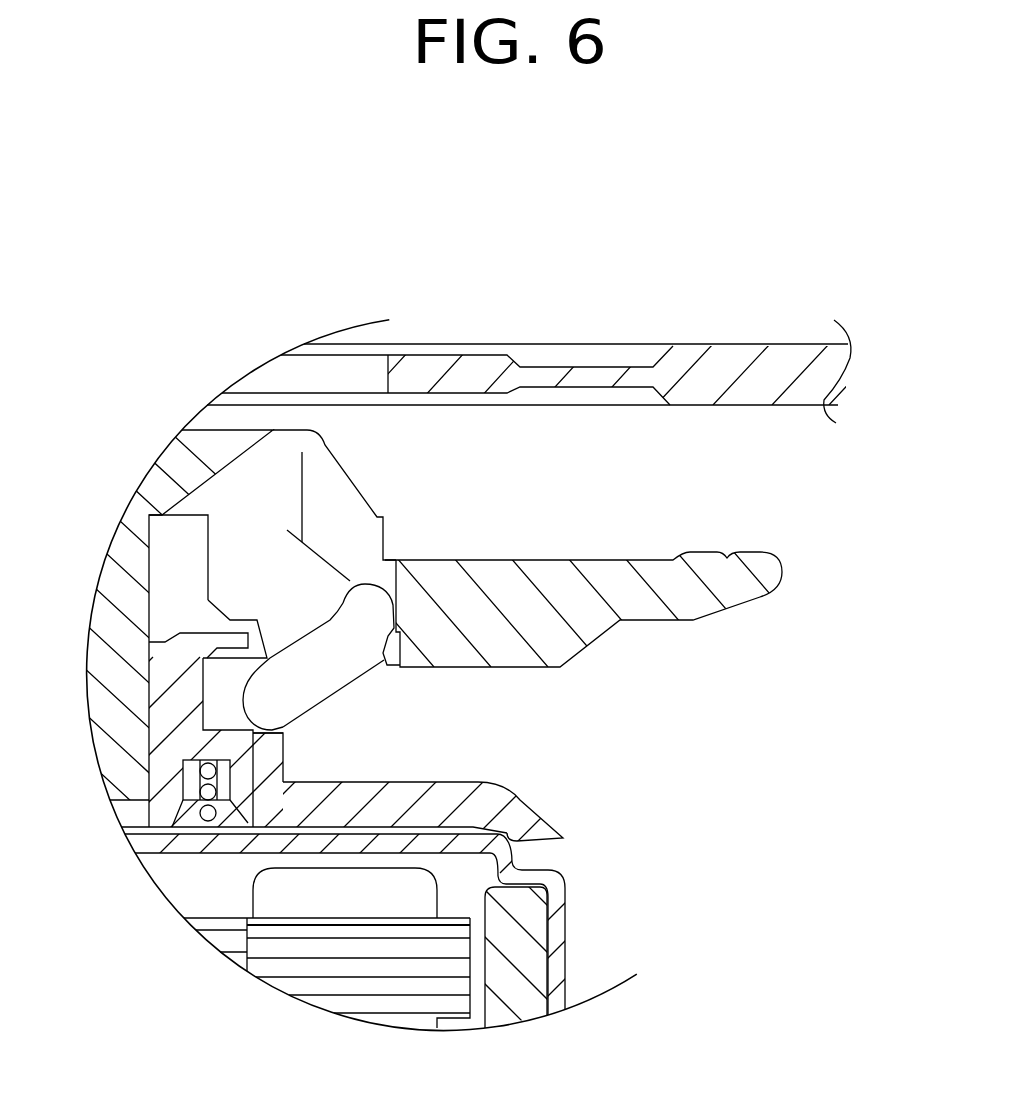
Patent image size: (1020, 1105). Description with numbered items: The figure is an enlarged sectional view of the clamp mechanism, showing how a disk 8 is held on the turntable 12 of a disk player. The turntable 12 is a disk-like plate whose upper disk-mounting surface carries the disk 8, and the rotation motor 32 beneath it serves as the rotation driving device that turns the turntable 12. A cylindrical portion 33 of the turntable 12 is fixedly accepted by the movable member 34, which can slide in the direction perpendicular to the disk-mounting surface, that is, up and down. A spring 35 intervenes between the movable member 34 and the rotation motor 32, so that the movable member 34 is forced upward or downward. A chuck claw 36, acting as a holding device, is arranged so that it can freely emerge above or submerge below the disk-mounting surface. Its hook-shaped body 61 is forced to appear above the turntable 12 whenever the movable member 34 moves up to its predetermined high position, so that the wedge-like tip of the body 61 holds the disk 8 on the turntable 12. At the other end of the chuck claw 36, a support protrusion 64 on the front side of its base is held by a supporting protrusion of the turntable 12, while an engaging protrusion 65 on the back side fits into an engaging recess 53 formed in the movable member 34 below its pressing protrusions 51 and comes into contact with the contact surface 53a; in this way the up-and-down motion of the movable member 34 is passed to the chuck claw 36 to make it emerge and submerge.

The disk 8 is at (690, 347).
The turntable 12 is at (783, 572).
The rotation motor 32 is at (560, 930).
The cylindrical portion 33 is at (172, 453).
The movable member 34 is at (563, 830).
The spring 35 is at (195, 827).
The chuck claw 36 is at (337, 541).
The pressing protrusion 51 is at (225, 633).
The engaging recess 53 is at (210, 683).
The contact surface 53a is at (283, 745).
The hook-shaped body 61 is at (276, 494).
The support protrusion 64 is at (377, 613).
The engaging protrusion 65 is at (257, 705).